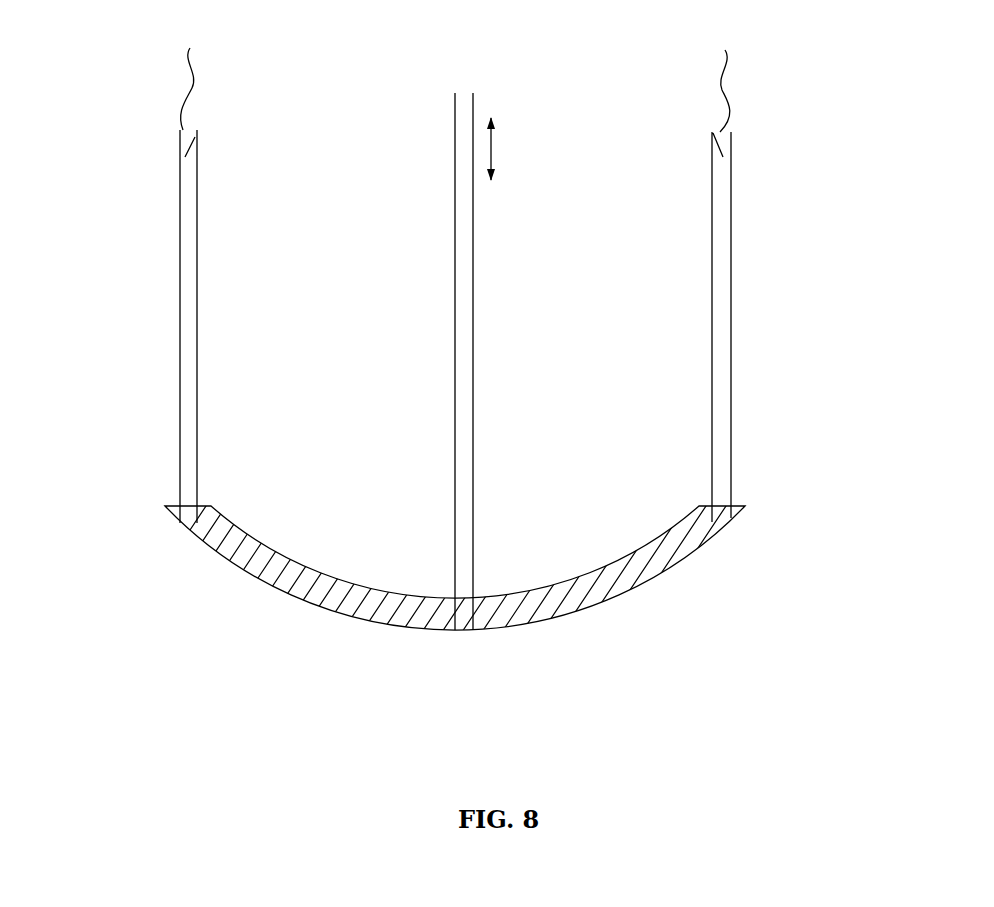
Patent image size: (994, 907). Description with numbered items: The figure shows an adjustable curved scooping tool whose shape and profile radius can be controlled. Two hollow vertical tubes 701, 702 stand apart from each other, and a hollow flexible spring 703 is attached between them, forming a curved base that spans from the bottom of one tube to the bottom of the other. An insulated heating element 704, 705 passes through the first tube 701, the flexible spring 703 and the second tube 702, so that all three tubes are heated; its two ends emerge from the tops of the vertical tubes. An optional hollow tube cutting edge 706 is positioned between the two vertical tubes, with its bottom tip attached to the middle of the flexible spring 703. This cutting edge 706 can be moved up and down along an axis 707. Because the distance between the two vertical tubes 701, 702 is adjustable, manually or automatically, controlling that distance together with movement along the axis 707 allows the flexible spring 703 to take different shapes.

The hollow vertical tube 701 is at (173, 314).
The hollow vertical tube 702 is at (737, 314).
The hollow flexible spring 703 is at (660, 570).
The insulated heating element 704 is at (180, 92).
The insulated heating element 705 is at (737, 77).
The hollow tube cutting edge 706 is at (482, 425).
The axis 707 is at (522, 149).